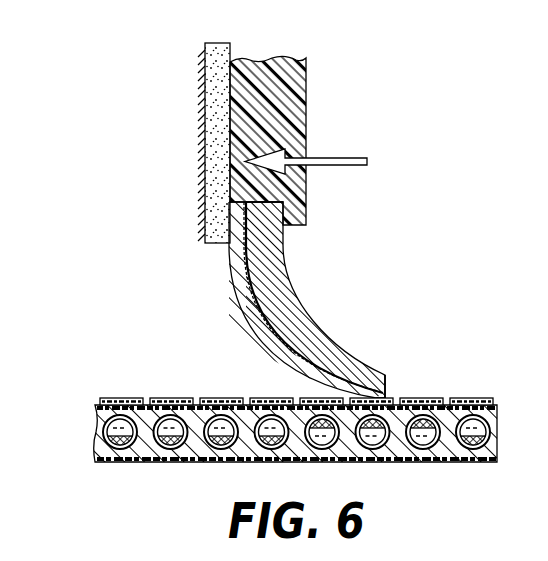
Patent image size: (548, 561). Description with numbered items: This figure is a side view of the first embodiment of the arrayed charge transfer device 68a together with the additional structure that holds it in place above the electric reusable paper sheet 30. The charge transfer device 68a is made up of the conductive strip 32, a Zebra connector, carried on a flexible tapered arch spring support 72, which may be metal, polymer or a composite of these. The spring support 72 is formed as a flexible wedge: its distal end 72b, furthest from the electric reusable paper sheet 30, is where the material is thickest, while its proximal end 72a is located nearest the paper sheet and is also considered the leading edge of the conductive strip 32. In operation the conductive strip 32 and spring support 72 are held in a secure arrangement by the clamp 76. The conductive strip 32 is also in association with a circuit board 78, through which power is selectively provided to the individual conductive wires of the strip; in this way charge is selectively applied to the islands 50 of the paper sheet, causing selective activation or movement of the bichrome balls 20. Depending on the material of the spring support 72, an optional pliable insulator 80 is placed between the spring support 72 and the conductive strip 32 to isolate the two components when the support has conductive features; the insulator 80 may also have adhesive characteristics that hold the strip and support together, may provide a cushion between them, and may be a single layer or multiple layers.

The circuit board 78 is at (230, 52).
The clamp 76 is at (302, 107).
The arrayed charge transfer device 68a is at (424, 219).
The spring support 72 is at (322, 338).
The distal end 72b is at (272, 233).
The proximal end 72a is at (386, 384).
The conductive strip 32 is at (255, 327).
The pliable insulator 80 is at (387, 383).
The electric reusable paper sheet 30 is at (148, 381).
The bichrome balls 20 is at (115, 430).
The islands 50 is at (310, 398).